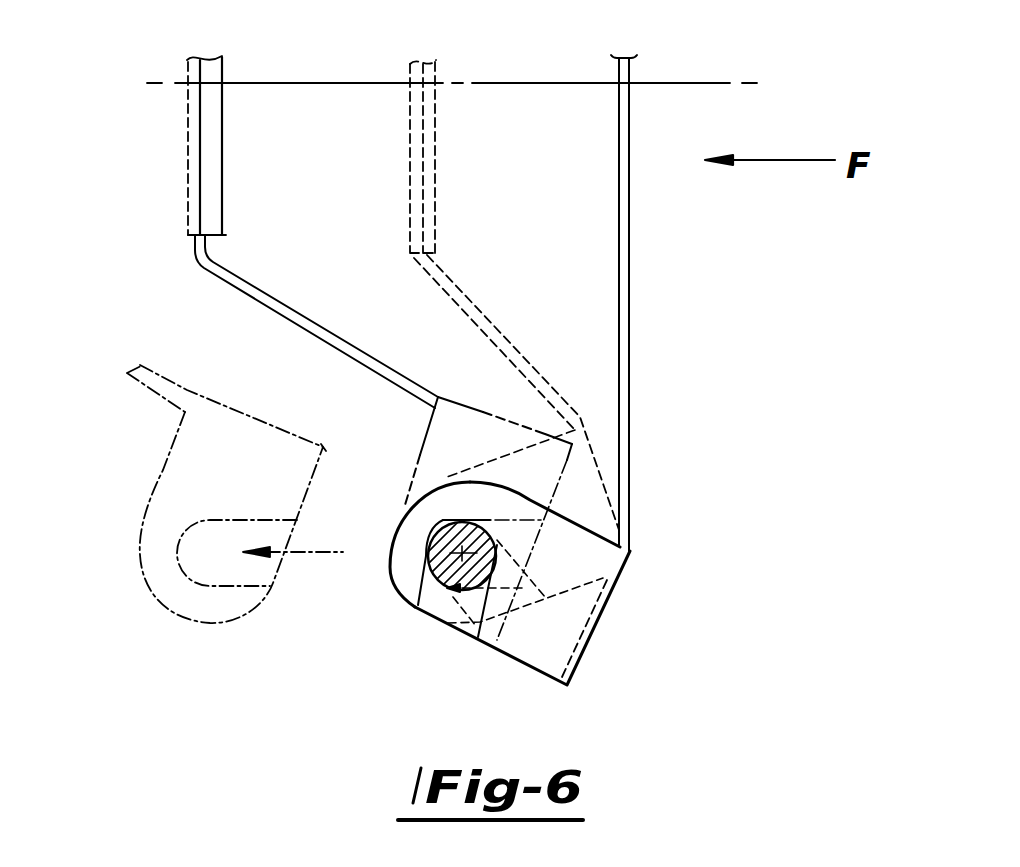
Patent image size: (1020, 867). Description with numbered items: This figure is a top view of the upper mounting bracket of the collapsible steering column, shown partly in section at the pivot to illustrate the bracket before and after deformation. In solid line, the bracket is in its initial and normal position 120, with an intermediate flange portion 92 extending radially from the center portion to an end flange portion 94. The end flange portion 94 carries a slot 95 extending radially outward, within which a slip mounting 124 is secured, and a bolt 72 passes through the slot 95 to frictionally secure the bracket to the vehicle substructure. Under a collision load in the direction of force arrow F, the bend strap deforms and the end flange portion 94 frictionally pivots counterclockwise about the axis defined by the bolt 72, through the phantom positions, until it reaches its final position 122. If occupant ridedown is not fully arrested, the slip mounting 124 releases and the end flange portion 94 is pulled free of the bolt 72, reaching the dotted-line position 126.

The bolt 72 is at (450, 584).
The intermediate flange portion 92 is at (629, 240).
The end flange portion 94 is at (545, 676).
The slot 95 is at (456, 638).
The initial and normal position 120 is at (662, 342).
The final position 122 is at (227, 277).
The slip mounting 124 is at (448, 625).
The end flange position 126 is at (162, 473).